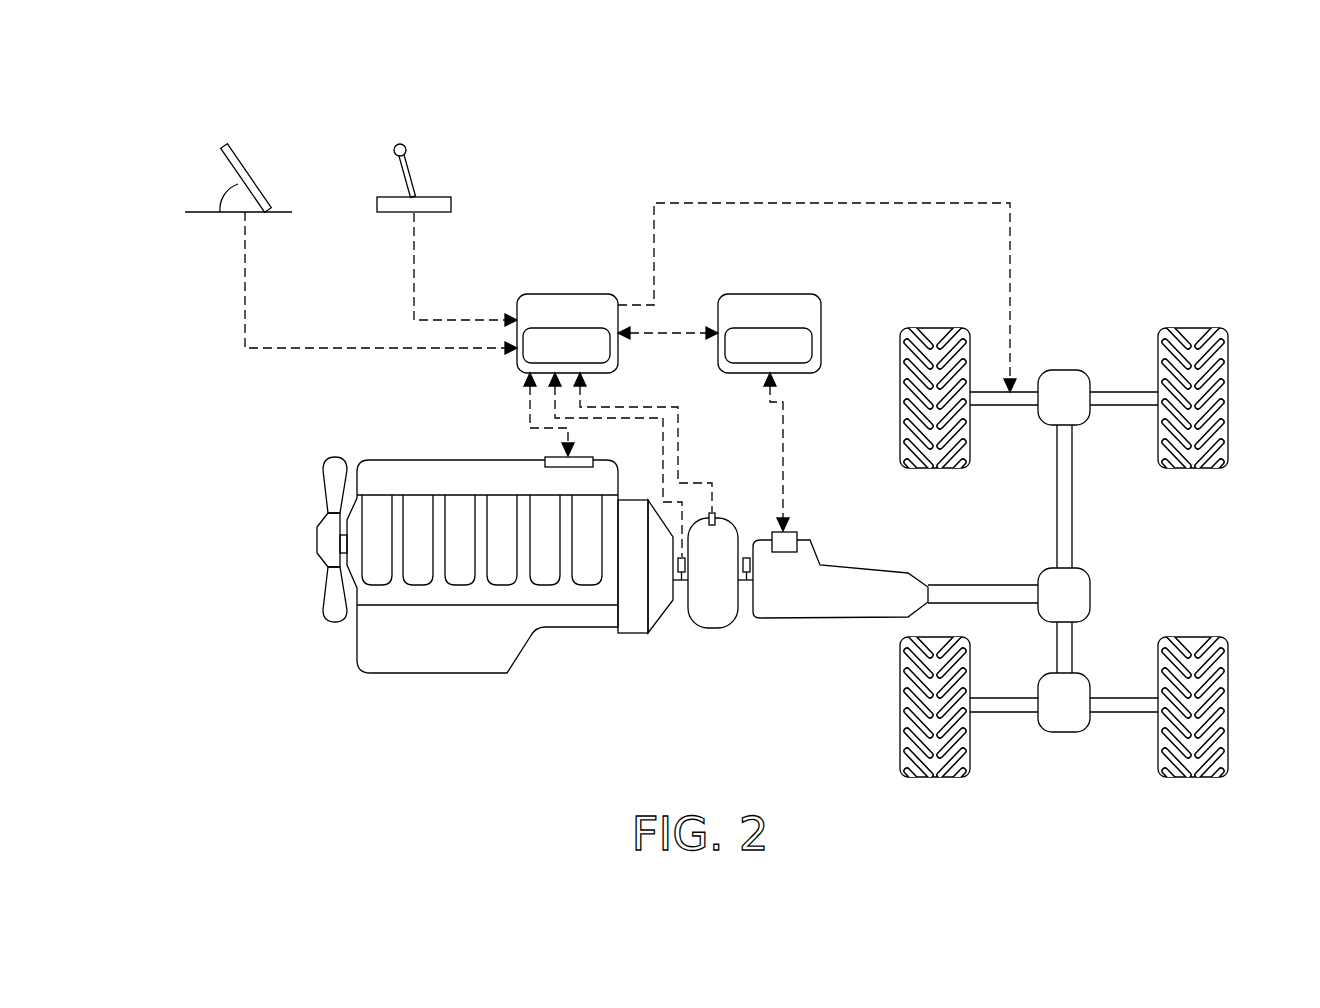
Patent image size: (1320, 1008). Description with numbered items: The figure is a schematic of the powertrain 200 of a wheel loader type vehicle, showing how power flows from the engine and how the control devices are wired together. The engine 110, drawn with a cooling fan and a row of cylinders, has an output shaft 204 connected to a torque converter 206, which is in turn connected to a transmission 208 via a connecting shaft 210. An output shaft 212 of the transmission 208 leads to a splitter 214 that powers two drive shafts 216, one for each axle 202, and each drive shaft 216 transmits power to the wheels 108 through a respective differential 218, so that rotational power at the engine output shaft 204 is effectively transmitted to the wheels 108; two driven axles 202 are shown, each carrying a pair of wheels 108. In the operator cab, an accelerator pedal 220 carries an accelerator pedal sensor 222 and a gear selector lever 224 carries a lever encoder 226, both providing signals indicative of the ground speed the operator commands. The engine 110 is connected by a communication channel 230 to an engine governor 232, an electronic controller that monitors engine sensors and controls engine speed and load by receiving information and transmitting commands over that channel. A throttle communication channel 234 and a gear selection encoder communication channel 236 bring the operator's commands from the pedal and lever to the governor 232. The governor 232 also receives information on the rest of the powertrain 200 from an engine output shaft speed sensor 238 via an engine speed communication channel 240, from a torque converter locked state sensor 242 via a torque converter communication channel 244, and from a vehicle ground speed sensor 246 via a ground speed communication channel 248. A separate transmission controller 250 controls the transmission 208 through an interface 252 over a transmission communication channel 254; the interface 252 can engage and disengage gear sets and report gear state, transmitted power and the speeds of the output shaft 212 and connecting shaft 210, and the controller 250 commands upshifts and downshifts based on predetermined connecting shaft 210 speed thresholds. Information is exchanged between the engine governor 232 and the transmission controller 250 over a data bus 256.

The powertrain 200 is at (778, 144).
The wheels 108 is at (932, 328).
The engine 110 is at (380, 478).
The axle 202 is at (1112, 397).
The output shaft 204 is at (680, 582).
The torque converter 206 is at (716, 628).
The transmission 208 is at (855, 583).
The connecting shaft 210 is at (745, 582).
The output shaft 212 is at (945, 588).
The splitter 214 is at (1065, 592).
The drive shafts 216 is at (1065, 498).
The differential 218 is at (1057, 382).
The accelerator pedal 220 is at (233, 150).
The accelerator pedal sensor 222 is at (225, 183).
The gear selector lever 224 is at (400, 143).
The lever encoder 226 is at (433, 212).
The communication channel 230 is at (527, 403).
The engine governor 232 is at (555, 300).
The throttle communication channel 234 is at (245, 277).
The gear selection encoder communication channel 236 is at (413, 257).
The engine output shaft speed sensor 238 is at (547, 460).
The engine speed communication channel 240 is at (663, 470).
The torque converter locked state sensor 242 is at (716, 513).
The torque converter communication channel 244 is at (680, 457).
The vehicle ground speed sensor 246 is at (1008, 388).
The ground speed communication channel 248 is at (858, 202).
The transmission controller 250 is at (795, 318).
The interface 252 is at (797, 535).
The transmission communication channel 254 is at (785, 460).
The data bus 256 is at (651, 333).